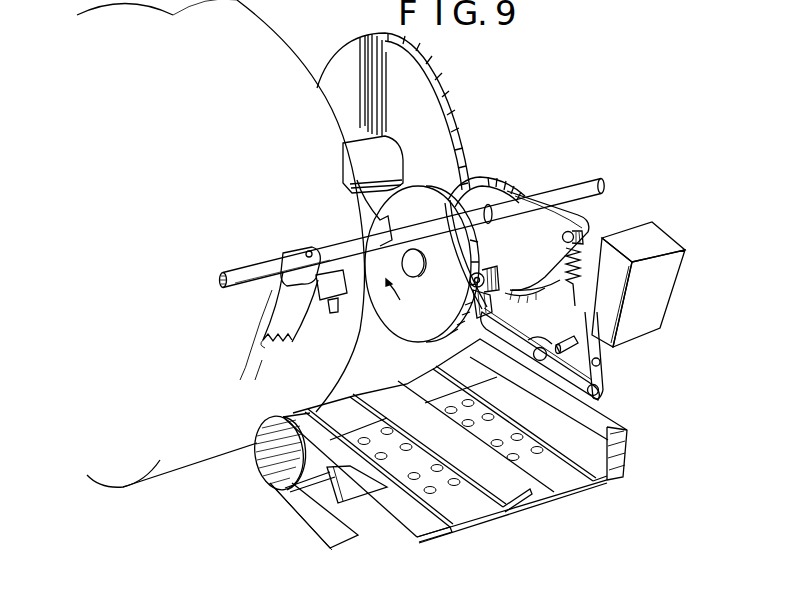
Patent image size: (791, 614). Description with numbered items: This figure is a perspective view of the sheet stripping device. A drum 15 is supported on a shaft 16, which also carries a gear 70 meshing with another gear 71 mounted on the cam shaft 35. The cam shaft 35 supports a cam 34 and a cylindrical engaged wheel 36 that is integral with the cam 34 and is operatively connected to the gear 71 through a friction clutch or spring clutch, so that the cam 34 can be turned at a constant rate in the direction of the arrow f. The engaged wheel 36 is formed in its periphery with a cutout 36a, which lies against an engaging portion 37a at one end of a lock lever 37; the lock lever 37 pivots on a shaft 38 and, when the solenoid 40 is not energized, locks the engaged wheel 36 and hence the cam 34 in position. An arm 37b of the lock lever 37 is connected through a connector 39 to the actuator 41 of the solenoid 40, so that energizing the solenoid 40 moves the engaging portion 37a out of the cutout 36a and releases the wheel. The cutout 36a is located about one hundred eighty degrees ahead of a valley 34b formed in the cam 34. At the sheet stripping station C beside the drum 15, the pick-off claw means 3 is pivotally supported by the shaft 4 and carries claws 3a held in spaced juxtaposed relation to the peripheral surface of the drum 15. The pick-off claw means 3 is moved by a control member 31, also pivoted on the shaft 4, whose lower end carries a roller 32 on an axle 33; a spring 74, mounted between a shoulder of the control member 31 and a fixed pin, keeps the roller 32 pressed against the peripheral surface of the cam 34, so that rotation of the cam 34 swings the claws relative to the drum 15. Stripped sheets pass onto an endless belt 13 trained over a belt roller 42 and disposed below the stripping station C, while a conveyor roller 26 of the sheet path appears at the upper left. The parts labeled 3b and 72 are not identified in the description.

The pick-off claw means 3 is at (288, 280).
The claws 3a is at (268, 342).
The pawl teeth 3b is at (277, 350).
The shaft 4 is at (233, 272).
The endless belt 13 is at (505, 502).
The drum 15 is at (294, 68).
The shaft 16 is at (388, 146).
The conveyor roller 26 is at (255, 11).
The sheet pick-off claw means control member 31 is at (555, 212).
The roller 32 is at (502, 273).
The axle 33 is at (481, 276).
The cam 34 is at (428, 194).
The valley 34b is at (380, 213).
The cam shaft 35 is at (420, 270).
The engaged wheel 36 is at (473, 180).
The cutout 36a is at (528, 290).
The lock lever 37 is at (507, 334).
The engaging portion 37a is at (476, 312).
The arm 37b is at (600, 390).
The shaft 38 is at (557, 342).
The connector 39 is at (603, 382).
The solenoid 40 is at (662, 284).
The actuator 41 is at (617, 347).
The belt roller 42 is at (278, 492).
The gear 70 is at (428, 78).
The gear 71 is at (512, 184).
The pin 72 is at (583, 236).
The spring 74 is at (574, 290).
The sheet stripping station C is at (247, 381).
The arrow f is at (400, 313).